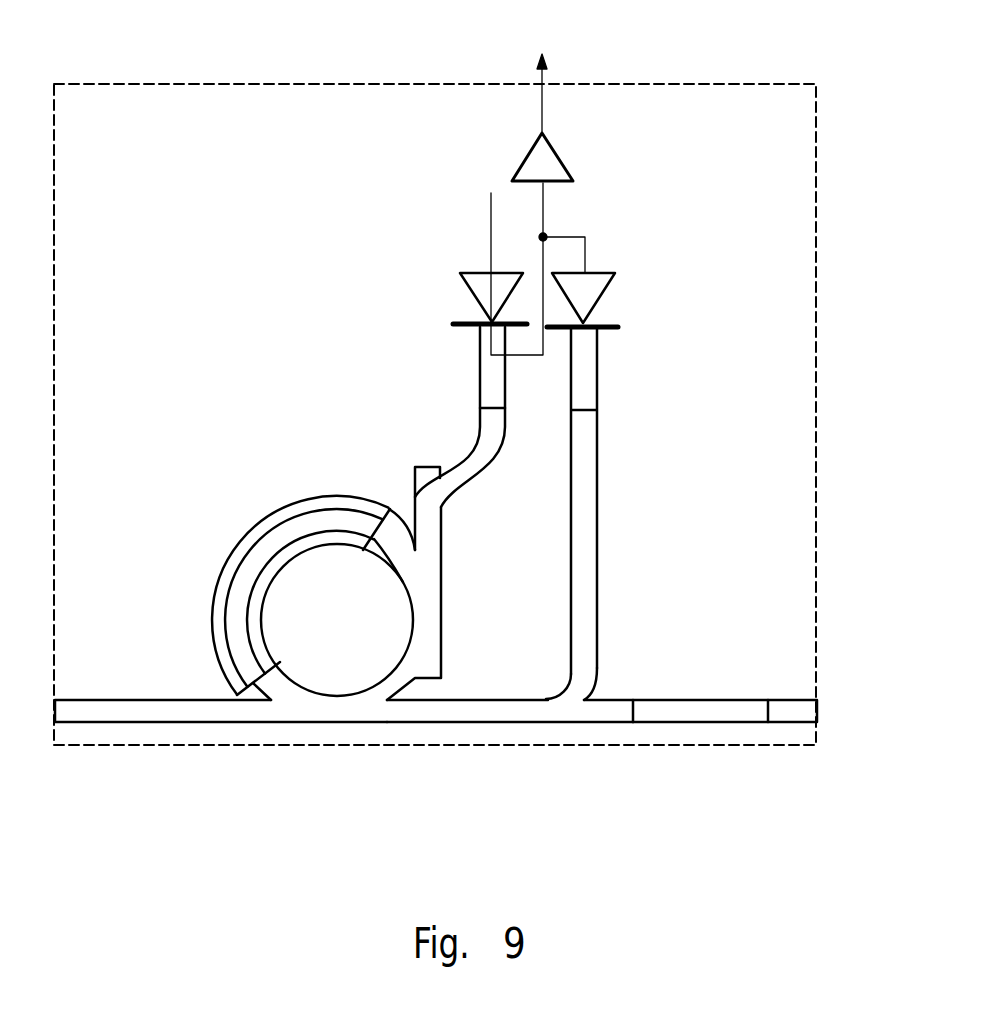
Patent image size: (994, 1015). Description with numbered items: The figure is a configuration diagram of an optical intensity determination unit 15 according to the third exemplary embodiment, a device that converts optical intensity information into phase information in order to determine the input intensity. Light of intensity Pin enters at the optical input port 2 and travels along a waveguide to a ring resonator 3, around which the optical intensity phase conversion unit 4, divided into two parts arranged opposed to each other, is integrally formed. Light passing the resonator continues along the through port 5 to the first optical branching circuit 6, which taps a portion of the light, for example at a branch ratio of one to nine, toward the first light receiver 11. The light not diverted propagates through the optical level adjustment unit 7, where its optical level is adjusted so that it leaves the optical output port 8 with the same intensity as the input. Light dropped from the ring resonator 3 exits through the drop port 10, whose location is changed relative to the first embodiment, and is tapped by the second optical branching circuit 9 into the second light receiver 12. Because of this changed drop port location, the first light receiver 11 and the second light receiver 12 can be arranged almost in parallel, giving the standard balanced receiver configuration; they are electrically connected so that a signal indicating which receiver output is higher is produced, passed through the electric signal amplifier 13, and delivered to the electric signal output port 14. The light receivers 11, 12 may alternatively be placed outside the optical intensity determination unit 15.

The optical input port 2 is at (82, 713).
The ring resonator 3 is at (332, 673).
The optical intensity phase conversion unit 4 is at (258, 605).
The through port 5 is at (475, 712).
The first optical branching circuit 6 is at (547, 703).
The optical level adjustment unit 7 is at (678, 715).
The optical output port 8 is at (785, 715).
The second optical branching circuit 9 is at (442, 507).
The drop port 10 is at (430, 535).
The first light receiver 11 is at (600, 355).
The second light receiver 12 is at (480, 353).
The electric signal amplifier 13 is at (573, 181).
The electric signal output port 14 is at (542, 76).
The optical intensity determination unit 15 is at (793, 83).